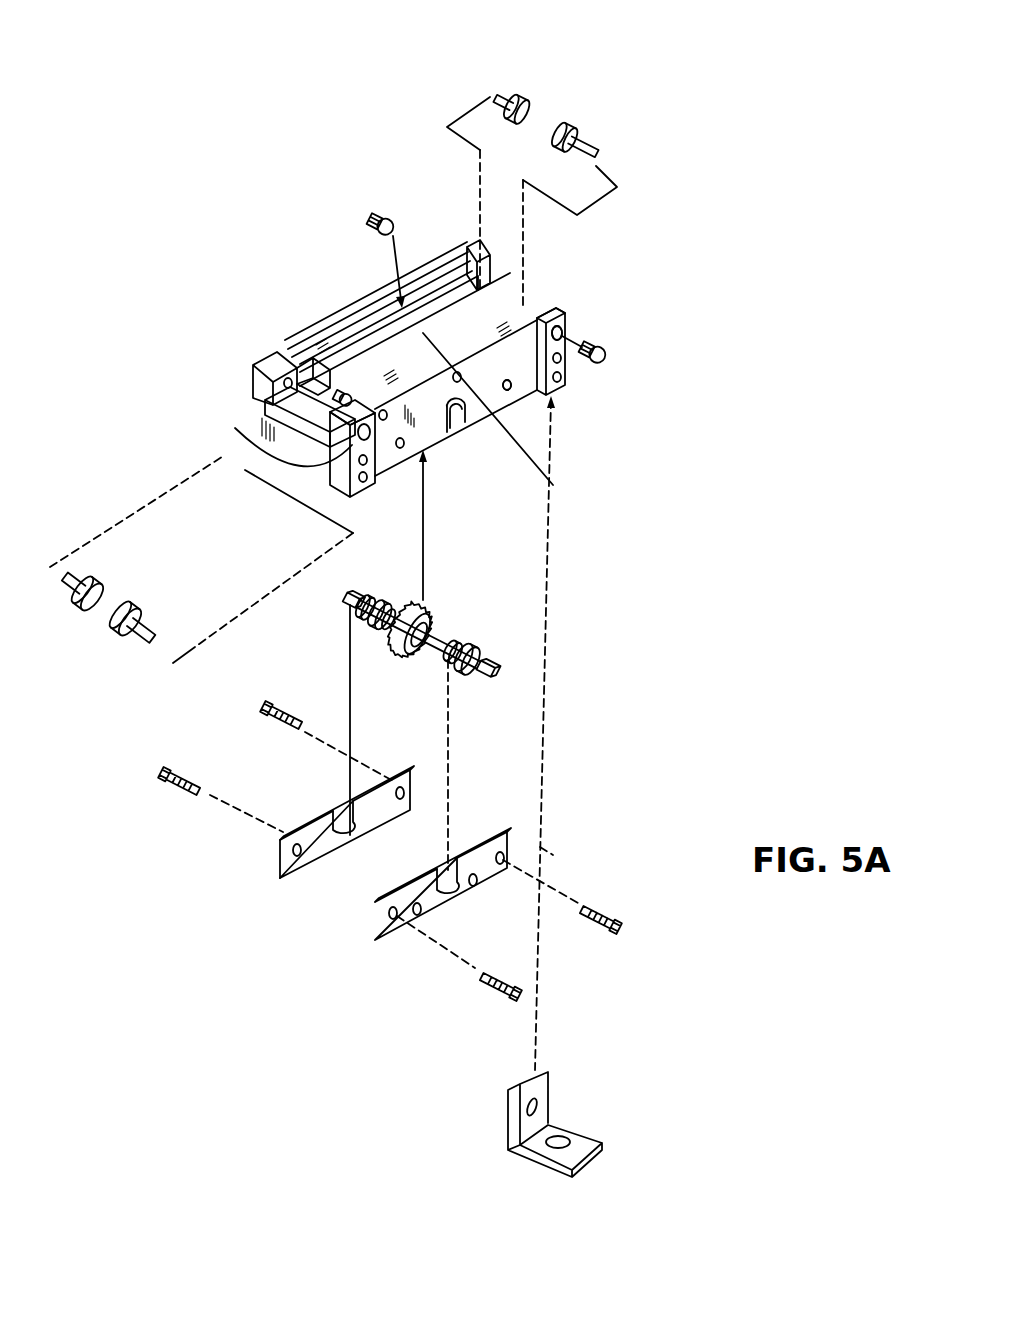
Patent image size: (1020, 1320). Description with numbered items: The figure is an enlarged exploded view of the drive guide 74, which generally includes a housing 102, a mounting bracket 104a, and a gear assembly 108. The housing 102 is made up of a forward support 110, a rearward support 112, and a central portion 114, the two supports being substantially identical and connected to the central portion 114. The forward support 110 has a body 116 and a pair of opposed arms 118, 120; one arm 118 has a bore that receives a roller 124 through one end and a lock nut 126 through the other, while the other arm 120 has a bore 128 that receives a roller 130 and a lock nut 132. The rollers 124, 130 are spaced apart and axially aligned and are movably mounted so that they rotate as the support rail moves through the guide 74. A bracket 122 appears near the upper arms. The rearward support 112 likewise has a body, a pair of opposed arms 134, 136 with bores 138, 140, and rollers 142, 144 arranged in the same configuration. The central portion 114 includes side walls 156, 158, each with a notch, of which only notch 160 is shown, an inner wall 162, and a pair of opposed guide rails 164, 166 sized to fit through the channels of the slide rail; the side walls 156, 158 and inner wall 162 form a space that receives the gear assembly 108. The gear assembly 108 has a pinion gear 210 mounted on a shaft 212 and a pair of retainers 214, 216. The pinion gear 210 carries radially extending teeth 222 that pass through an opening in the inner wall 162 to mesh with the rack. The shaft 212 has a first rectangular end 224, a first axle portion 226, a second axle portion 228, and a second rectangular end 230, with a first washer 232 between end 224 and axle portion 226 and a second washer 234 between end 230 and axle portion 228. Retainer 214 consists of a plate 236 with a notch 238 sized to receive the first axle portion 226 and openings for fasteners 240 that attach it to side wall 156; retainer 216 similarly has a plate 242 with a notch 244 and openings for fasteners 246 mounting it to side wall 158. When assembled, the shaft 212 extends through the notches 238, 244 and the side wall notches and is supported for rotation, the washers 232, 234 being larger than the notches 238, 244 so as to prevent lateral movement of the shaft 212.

The drive guide 74 is at (336, 88).
The housing 102 is at (160, 192).
The mounting bracket 104a is at (602, 1150).
The gear assembly 108 is at (757, 582).
The forward support 110 is at (570, 384).
The rearward support 112 is at (246, 361).
The central portion 114 is at (398, 298).
The body 116 is at (568, 367).
The arm 118 is at (467, 262).
The arm 120 is at (566, 305).
The bracket 122 is at (498, 240).
The roller 124 is at (540, 112).
The lock nut 126 is at (368, 212).
The bore 128 is at (567, 333).
The roller 130 is at (577, 133).
The lock nut 132 is at (610, 360).
The arm 134 is at (277, 365).
The arm 136 is at (275, 445).
The bore 138 is at (262, 432).
The bore 140 is at (228, 460).
The roller 142 is at (93, 580).
The roller 144 is at (130, 605).
The side wall 156 is at (372, 368).
The side wall 158 is at (553, 485).
The notch 160 is at (457, 435).
The inner wall 162 is at (318, 405).
The guide rail 164 is at (340, 382).
The guide rail 166 is at (550, 395).
The pinion gear 210 is at (440, 613).
The shaft 212 is at (506, 655).
The retainer 214 is at (277, 867).
The retainer 216 is at (527, 833).
The teeth 222 is at (410, 603).
The first rectangular end 224 is at (358, 614).
The first axle portion 226 is at (360, 622).
The second axle portion 228 is at (450, 678).
The second rectangular end 230 is at (470, 685).
The first washer 232 is at (372, 588).
The second washer 234 is at (477, 657).
The plate 236 is at (320, 850).
The notch 238 is at (343, 810).
The fasteners 240 is at (278, 728).
The plate 242 is at (520, 870).
The notch 244 is at (440, 872).
The fasteners 246 is at (607, 925).